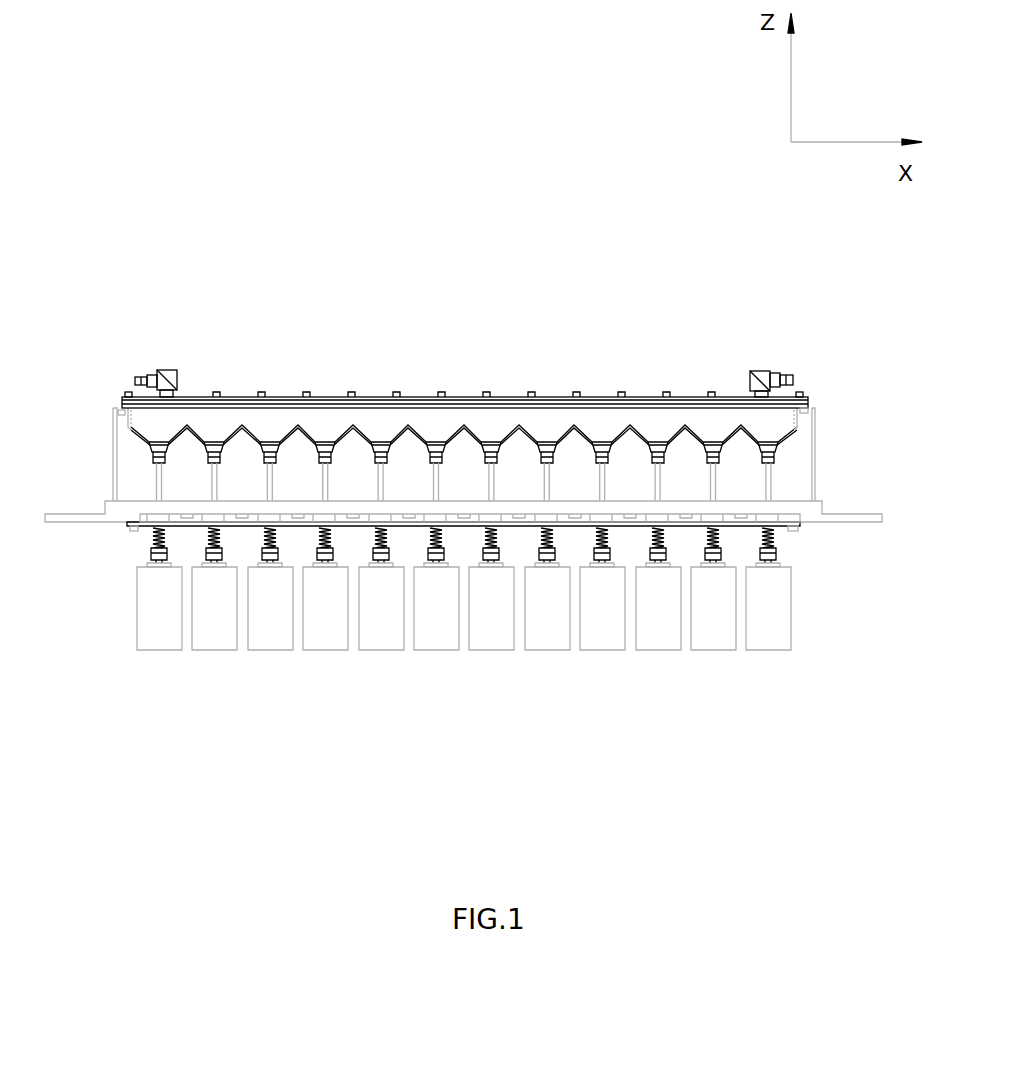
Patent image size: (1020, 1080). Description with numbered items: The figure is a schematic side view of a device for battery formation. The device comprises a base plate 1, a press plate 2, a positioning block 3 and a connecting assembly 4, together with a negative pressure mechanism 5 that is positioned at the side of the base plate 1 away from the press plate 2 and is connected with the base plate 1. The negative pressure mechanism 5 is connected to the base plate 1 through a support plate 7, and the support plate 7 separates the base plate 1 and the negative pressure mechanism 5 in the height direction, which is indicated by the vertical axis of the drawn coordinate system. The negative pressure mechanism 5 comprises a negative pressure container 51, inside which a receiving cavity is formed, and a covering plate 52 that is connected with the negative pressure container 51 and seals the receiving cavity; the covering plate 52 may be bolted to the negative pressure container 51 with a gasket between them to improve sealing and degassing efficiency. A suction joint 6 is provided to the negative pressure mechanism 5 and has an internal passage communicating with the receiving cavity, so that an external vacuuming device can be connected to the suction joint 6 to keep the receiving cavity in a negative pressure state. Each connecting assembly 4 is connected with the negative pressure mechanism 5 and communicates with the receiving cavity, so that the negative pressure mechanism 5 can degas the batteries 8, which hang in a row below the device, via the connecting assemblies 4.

The base plate 1 is at (83, 518).
The press plate 2 is at (127, 523).
The positioning block 3 is at (163, 518).
The connecting assembly 4 is at (140, 545).
The negative pressure mechanism 5 is at (509, 349).
The negative pressure container 51 is at (150, 425).
The covering plate 52 is at (410, 398).
The suction joint 6 is at (163, 370).
The support plate 7 is at (113, 407).
The battery 8 is at (156, 643).